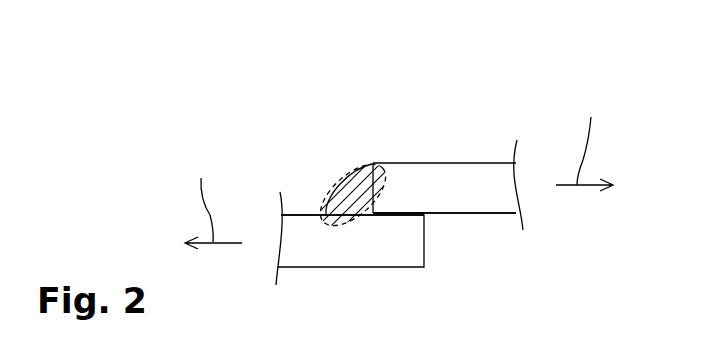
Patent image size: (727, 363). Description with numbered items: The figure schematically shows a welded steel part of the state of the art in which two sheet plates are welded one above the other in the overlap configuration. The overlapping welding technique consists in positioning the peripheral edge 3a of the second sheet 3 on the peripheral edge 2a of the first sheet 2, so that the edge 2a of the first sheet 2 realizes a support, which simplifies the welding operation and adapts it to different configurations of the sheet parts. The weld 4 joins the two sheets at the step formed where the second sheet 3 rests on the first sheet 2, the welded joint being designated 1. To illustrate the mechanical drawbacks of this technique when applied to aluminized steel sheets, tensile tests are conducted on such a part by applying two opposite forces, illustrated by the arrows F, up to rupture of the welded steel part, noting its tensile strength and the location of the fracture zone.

The weld joint 1 is at (394, 132).
The first sheet 2 is at (300, 178).
The peripheral edge of the first sheet 2a is at (382, 240).
The second sheet 3 is at (476, 142).
The peripheral edge of the second sheet 3a is at (425, 187).
The weld bead 4 is at (357, 188).
The forces F is at (399, 170).